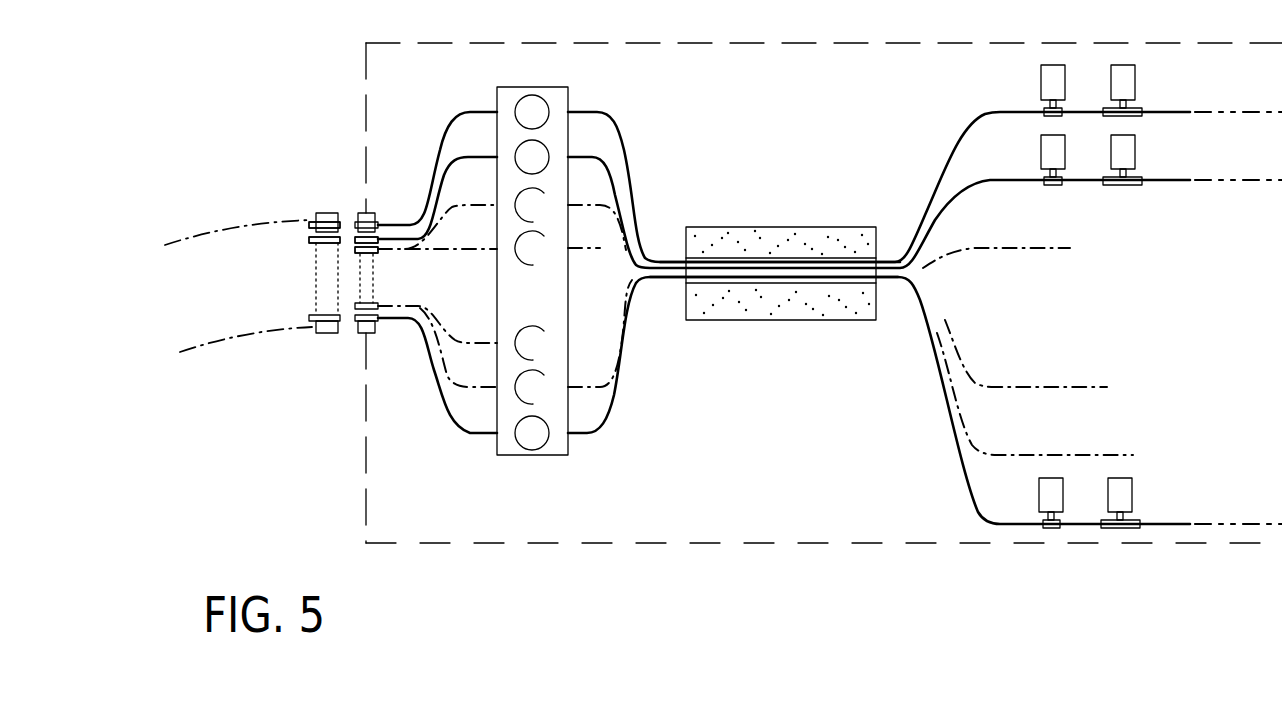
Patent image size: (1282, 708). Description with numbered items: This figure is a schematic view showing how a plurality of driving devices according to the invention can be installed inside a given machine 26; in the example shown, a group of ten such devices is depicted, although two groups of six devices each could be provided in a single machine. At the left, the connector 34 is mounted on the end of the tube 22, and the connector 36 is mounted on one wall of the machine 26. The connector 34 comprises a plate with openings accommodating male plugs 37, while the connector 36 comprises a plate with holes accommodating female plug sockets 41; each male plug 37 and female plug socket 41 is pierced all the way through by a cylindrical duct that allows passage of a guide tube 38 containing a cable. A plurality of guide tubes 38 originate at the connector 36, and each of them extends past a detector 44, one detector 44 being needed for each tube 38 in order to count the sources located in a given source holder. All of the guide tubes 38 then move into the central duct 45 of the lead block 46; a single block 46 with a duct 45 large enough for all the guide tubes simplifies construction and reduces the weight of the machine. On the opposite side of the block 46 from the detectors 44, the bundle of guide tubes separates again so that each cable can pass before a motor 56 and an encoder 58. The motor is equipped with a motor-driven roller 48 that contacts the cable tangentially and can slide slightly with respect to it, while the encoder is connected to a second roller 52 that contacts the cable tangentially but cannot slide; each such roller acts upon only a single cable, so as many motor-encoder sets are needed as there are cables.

The tube 22 is at (208, 228).
The machine 26 is at (366, 79).
The connector 34 is at (325, 213).
The connector 36 is at (357, 333).
The male plugs 37 is at (310, 240).
The guide tubes 38 is at (468, 157).
The female plug sockets 41 is at (366, 249).
The detector 44 is at (537, 155).
The central duct 45 is at (700, 275).
The lead block 46 is at (815, 237).
The motor-driven roller 48 is at (1050, 184).
The second roller 52 is at (1130, 184).
The motor 56 is at (1050, 147).
The encoder 58 is at (1127, 142).